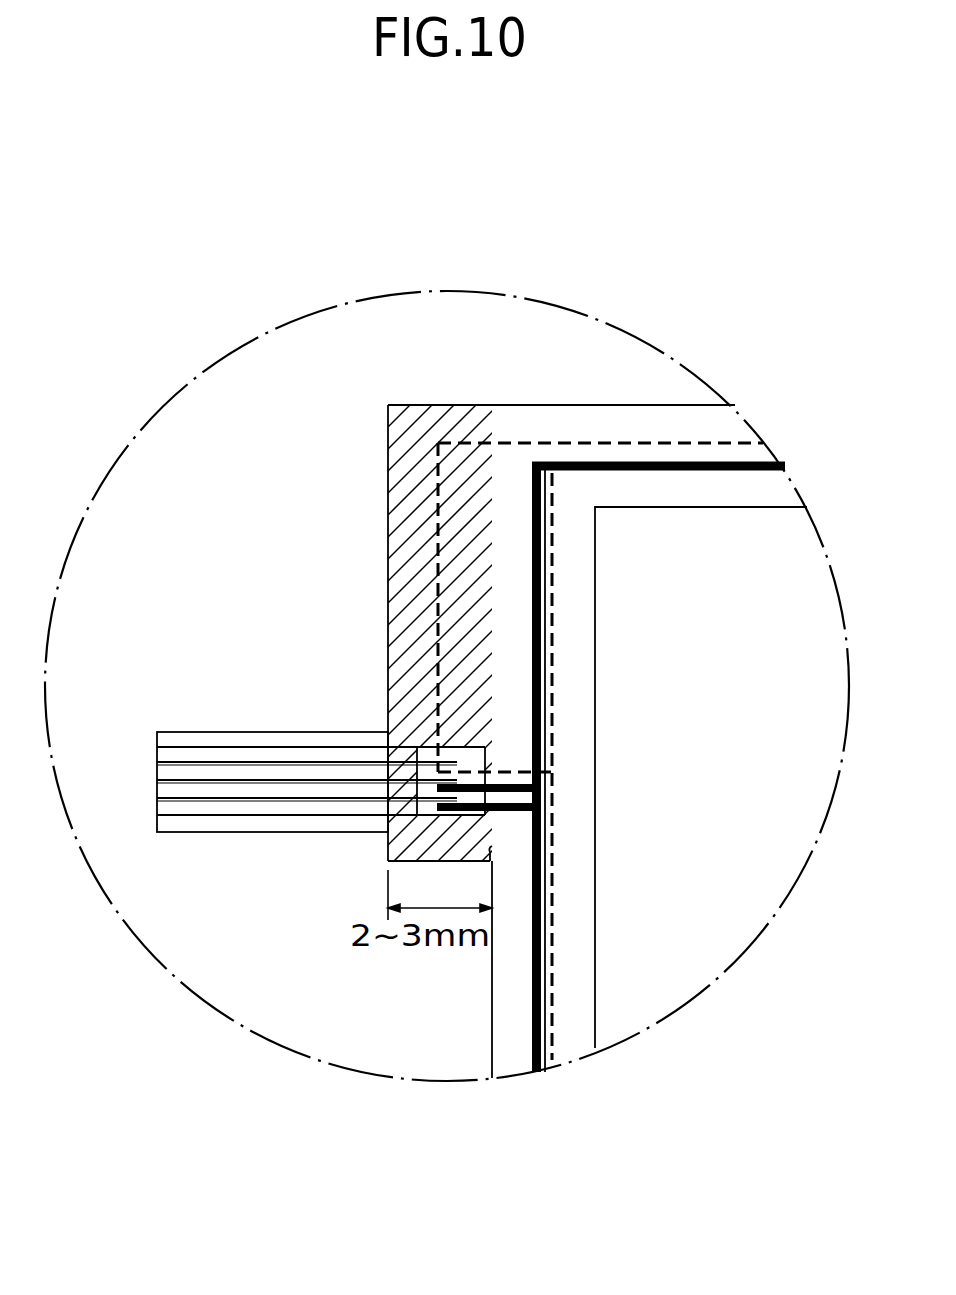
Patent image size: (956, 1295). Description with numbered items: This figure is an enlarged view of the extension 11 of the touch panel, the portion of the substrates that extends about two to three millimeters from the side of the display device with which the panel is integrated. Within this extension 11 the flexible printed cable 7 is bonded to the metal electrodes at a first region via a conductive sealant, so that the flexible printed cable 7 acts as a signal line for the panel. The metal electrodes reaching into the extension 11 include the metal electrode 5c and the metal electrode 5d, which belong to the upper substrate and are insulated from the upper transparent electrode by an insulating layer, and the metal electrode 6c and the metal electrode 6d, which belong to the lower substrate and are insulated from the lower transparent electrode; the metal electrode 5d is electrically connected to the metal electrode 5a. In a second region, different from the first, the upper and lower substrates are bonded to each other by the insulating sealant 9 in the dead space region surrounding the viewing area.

The metal electrode 5a is at (553, 1034).
The metal electrode 5c is at (437, 443).
The metal electrode 5d is at (507, 770).
The metal electrode 6c is at (532, 611).
The metal electrode 6d is at (531, 1029).
The flexible printed cable 7 is at (256, 832).
The insulating sealant 9 is at (455, 422).
The extension 11 is at (388, 495).